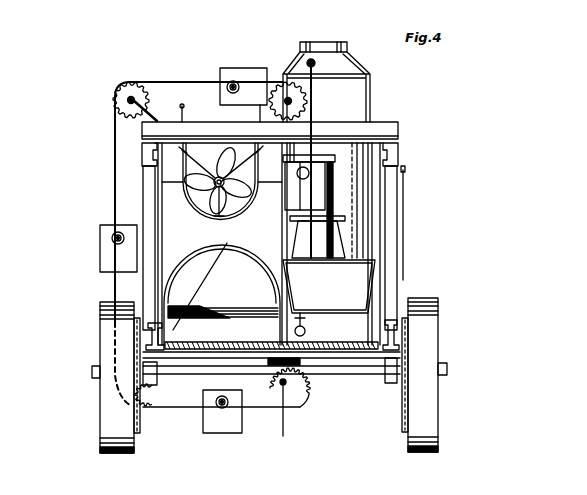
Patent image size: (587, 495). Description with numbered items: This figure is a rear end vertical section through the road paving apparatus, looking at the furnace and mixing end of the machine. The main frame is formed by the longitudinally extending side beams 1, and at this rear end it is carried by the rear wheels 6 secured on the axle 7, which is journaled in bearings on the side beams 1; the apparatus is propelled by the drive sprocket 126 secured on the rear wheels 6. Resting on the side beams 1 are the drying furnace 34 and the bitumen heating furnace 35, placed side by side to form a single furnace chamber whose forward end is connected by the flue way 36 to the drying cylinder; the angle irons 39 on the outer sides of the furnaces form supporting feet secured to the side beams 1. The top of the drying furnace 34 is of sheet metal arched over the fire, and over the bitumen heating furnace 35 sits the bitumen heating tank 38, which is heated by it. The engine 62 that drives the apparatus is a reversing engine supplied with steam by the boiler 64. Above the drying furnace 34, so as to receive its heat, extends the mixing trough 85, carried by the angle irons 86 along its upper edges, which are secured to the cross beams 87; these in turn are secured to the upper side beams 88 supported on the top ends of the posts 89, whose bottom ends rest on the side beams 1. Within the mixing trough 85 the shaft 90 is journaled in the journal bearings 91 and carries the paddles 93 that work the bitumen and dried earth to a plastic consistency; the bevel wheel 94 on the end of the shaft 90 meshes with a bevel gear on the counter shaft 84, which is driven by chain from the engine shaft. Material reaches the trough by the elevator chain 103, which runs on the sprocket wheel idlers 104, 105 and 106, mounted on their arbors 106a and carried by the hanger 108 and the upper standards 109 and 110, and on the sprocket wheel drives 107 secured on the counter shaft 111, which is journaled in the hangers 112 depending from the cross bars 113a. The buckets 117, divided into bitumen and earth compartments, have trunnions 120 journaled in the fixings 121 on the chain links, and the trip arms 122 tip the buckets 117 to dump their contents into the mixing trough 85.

The side beams 1 is at (143, 340).
The rear wheels 6 is at (104, 426).
The axle 7 is at (92, 372).
The drying furnace 34 is at (230, 248).
The bitumen heating furnace 35 is at (345, 329).
The flue way 36 is at (301, 326).
The bitumen heating tank 38 is at (329, 286).
The angle irons 39 is at (158, 318).
The engine 62 is at (330, 190).
The boiler 64 is at (370, 80).
The counter shaft 84 is at (390, 220).
The mixing trough 85 is at (197, 208).
The angle irons 86 is at (218, 162).
The cross beams 87 is at (388, 128).
The side beams 88 is at (145, 155).
The posts 89 is at (147, 186).
The shaft 90 is at (218, 177).
The journal bearings 91 is at (248, 178).
The paddles 93 is at (194, 185).
The bevel wheel 94 is at (216, 207).
The elevator chain 103 is at (184, 410).
The sprocket wheel idler 104 is at (145, 408).
The sprocket wheel idler 105 is at (112, 88).
The sprocket wheel idler 106 is at (312, 100).
The arbors 106a is at (137, 84).
The sprocket wheel drives 107 is at (300, 404).
The hanger 108 is at (152, 394).
The upper standard 109 is at (153, 116).
The upper standard 110 is at (289, 103).
The counter shaft 111 is at (284, 416).
The hangers 112 is at (290, 362).
The cross bars 113a is at (362, 355).
The buckets 117 is at (253, 68).
The trunnions 120 is at (232, 81).
The fixings 121 is at (230, 84).
The trip arms 122 is at (262, 112).
The drive sprocket 126 is at (138, 435).